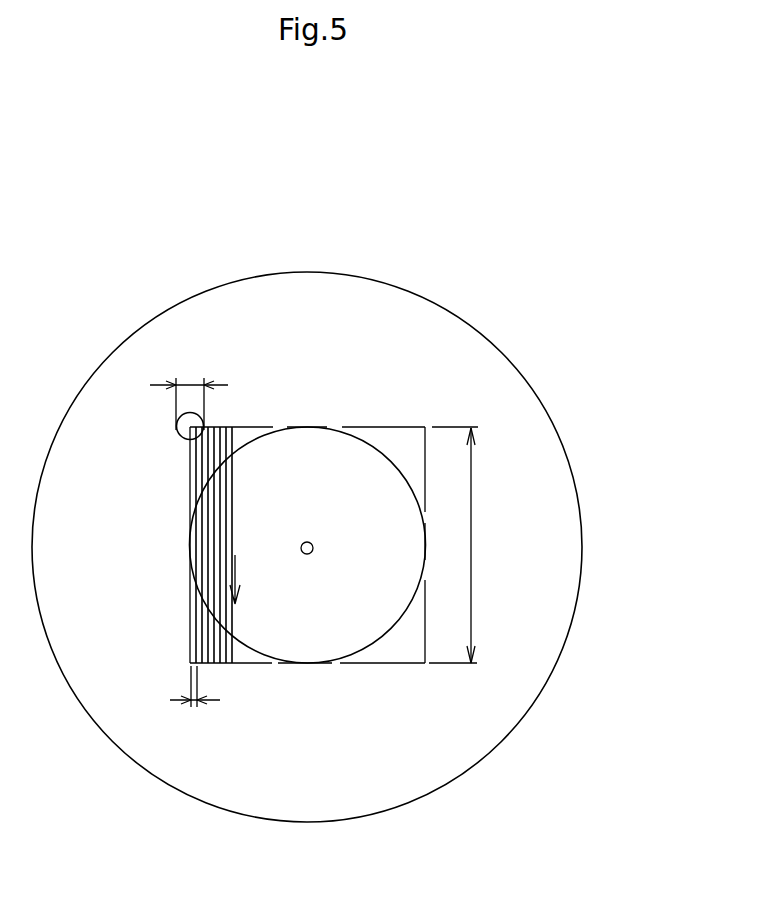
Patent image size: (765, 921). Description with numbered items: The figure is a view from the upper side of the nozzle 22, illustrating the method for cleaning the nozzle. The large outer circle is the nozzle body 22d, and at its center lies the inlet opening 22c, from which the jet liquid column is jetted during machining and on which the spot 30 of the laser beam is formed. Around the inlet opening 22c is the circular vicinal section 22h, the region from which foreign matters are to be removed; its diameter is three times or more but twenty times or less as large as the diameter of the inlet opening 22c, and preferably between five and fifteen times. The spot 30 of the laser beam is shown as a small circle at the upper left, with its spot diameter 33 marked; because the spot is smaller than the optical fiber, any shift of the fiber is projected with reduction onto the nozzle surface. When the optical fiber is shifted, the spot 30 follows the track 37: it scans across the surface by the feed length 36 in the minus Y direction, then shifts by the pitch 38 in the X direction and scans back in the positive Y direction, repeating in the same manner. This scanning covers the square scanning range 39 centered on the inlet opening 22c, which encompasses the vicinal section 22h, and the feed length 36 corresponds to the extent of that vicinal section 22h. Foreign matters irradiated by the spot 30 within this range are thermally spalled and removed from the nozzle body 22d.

The nozzle 22 is at (527, 192).
The nozzle body 22d is at (498, 342).
The vicinal section 22h is at (360, 440).
The inlet opening 22c is at (312, 553).
The spot of the laser beam 30 is at (178, 437).
The spot diameter 33 is at (191, 384).
The feed length 36 is at (472, 545).
The track 37 is at (235, 503).
The pitch 38 is at (198, 703).
The scanning range 39 is at (393, 663).